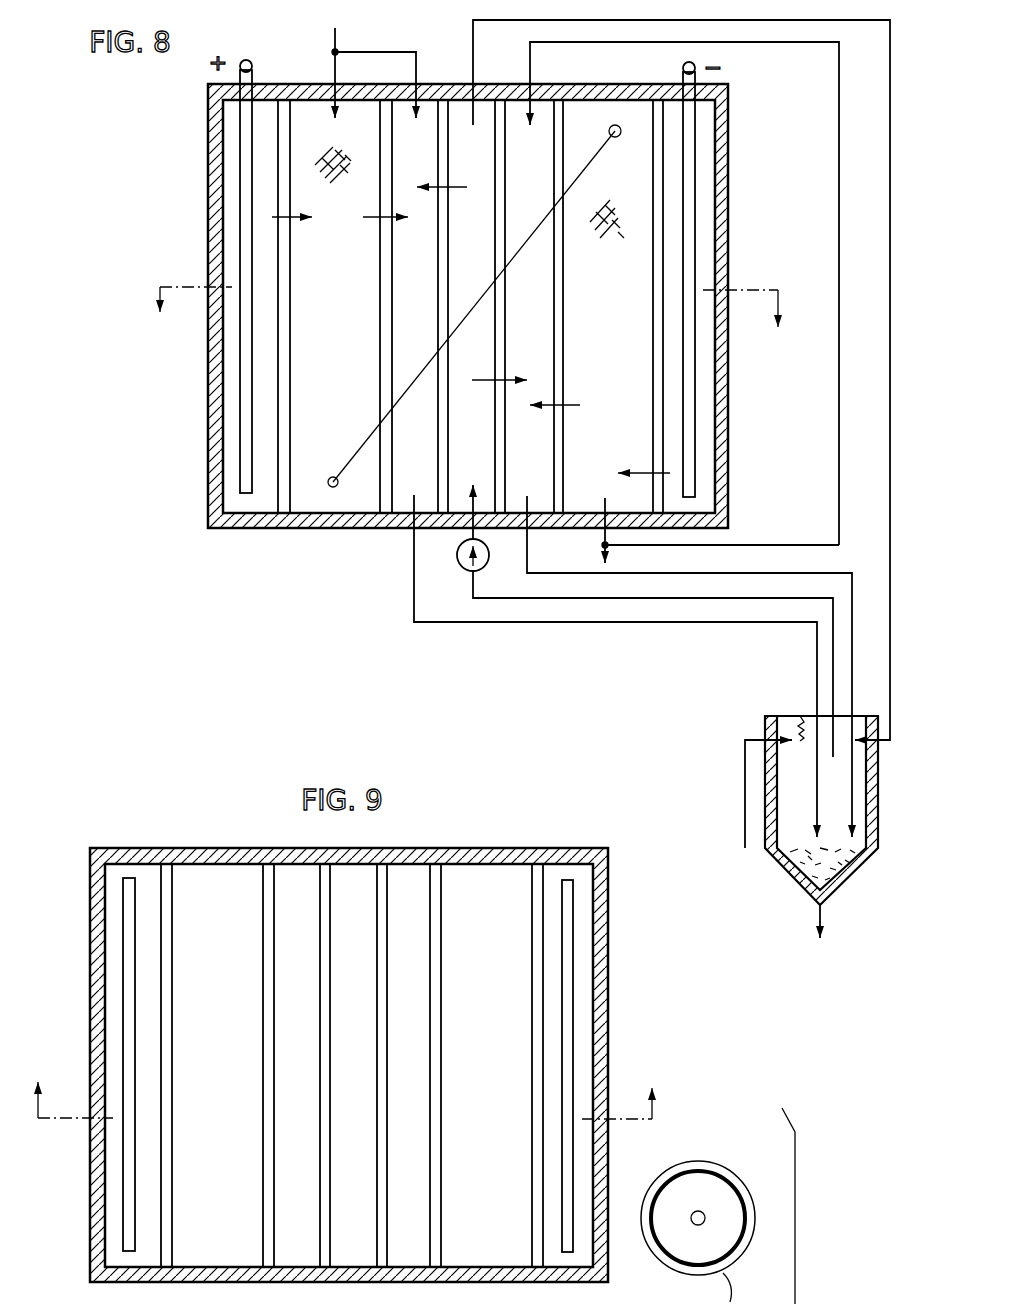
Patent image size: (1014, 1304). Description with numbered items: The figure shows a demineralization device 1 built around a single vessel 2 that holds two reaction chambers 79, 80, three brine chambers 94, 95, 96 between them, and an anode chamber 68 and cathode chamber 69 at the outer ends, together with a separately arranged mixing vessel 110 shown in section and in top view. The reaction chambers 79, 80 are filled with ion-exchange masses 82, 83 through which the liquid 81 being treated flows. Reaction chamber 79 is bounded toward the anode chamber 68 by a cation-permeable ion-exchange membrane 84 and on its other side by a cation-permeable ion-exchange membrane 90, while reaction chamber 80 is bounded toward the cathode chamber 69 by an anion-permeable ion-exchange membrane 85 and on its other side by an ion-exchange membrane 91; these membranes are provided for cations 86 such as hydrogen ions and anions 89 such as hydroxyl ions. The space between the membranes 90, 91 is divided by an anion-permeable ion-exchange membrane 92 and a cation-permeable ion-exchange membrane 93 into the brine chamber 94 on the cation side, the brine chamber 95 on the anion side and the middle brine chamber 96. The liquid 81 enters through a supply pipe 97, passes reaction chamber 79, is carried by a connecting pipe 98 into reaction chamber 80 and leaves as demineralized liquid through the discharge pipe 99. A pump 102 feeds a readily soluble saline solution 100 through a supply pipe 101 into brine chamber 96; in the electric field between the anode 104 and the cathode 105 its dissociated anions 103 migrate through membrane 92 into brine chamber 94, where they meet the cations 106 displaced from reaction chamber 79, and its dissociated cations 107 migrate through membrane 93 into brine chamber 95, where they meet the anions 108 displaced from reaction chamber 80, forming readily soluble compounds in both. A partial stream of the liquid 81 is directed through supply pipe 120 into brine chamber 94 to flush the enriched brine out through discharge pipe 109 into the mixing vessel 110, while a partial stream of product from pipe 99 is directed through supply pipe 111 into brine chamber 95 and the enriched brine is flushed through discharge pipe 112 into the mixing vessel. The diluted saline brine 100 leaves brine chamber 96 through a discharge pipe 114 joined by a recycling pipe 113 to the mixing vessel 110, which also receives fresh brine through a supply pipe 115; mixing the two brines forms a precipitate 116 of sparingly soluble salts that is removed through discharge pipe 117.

In FIG. 8, the device 1 is at (206, 130).
In FIG. 9, the device 1 is at (88, 985).
In FIG. 8, the vessel 2 is at (208, 238).
In FIG. 8, the anode chamber 68 is at (232, 184).
In FIG. 9, the anode chamber 68 is at (148, 1078).
In FIG. 8, the cathode chamber 69 is at (703, 406).
In FIG. 9, the cathode chamber 69 is at (553, 1060).
In FIG. 8, the reaction chamber 79 is at (318, 339).
In FIG. 9, the reaction chamber 79 is at (205, 995).
In FIG. 8, the reaction chamber 80 is at (593, 336).
In FIG. 8, the liquid being treated 81 is at (335, 36).
In FIG. 8, the ion-exchange mass 82 is at (338, 162).
In FIG. 8, the ion-exchange mass 83 is at (606, 240).
In FIG. 9, the ion-exchange mass 83 is at (475, 995).
In FIG. 8, the ion-exchange membrane 84 is at (287, 385).
In FIG. 9, the ion-exchange membrane 84 is at (165, 1152).
In FIG. 8, the ion-exchange membrane 85 is at (655, 400).
In FIG. 8, the cations 86 is at (297, 218).
In FIG. 8, the anions 89 is at (632, 476).
In FIG. 8, the ion-exchange membrane 90 is at (380, 390).
In FIG. 9, the ion-exchange membrane 90 is at (265, 1165).
In FIG. 8, the ion-exchange membrane 91 is at (557, 365).
In FIG. 9, the ion-exchange membrane 91 is at (435, 1163).
In FIG. 8, the ion-exchange membrane 92 is at (439, 450).
In FIG. 9, the ion-exchange membrane 92 is at (322, 1160).
In FIG. 8, the ion-exchange membrane 93 is at (500, 483).
In FIG. 9, the ion-exchange membrane 93 is at (380, 1160).
In FIG. 8, the brine chamber 94 is at (399, 268).
In FIG. 9, the brine chamber 94 is at (284, 995).
In FIG. 8, the brine chamber 95 is at (515, 336).
In FIG. 9, the brine chamber 95 is at (395, 995).
In FIG. 8, the brine chamber 96 is at (455, 268).
In FIG. 9, the brine chamber 96 is at (338, 995).
In FIG. 8, the supply pipe 97 is at (333, 78).
In FIG. 8, the connecting pipe 98 is at (353, 453).
In FIG. 8, the discharge pipe 99 is at (612, 563).
In FIG. 8, the saline solution 100 is at (805, 720).
In FIG. 8, the supply pipe 101 is at (467, 537).
In FIG. 8, the pump 102 is at (458, 571).
In FIG. 8, the anions 103 is at (462, 187).
In FIG. 8, the anode 104 is at (213, 410).
In FIG. 9, the anode 104 is at (133, 1228).
In FIG. 8, the cathode 105 is at (690, 455).
In FIG. 9, the cathode 105 is at (563, 1218).
In FIG. 8, the cations 106 is at (372, 218).
In FIG. 8, the cations 107 is at (478, 380).
In FIG. 8, the anions 108 is at (578, 405).
In FIG. 8, the discharge pipe 109 is at (412, 580).
In FIG. 8, the mixing vessel 110 is at (783, 794).
In FIG. 8, the supply pipe 111 is at (530, 75).
In FIG. 8, the discharge pipe 112 is at (540, 575).
In FIG. 8, the recycling pipe 113 is at (892, 450).
In FIG. 8, the discharge pipe 114 is at (473, 57).
In FIG. 8, the supply pipe 115 is at (745, 840).
In FIG. 8, the precipitate 116 is at (853, 875).
In FIG. 8, the discharge pipe 117 is at (827, 923).
In FIG. 8, the supply pipe 120 is at (377, 52).